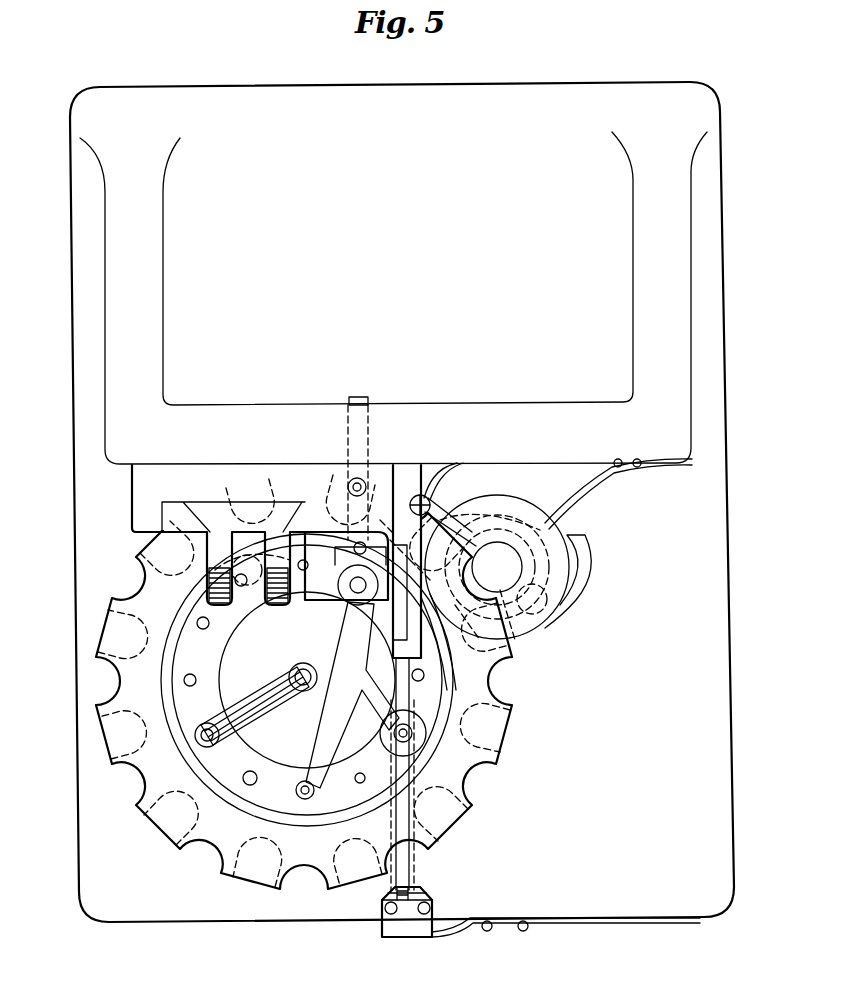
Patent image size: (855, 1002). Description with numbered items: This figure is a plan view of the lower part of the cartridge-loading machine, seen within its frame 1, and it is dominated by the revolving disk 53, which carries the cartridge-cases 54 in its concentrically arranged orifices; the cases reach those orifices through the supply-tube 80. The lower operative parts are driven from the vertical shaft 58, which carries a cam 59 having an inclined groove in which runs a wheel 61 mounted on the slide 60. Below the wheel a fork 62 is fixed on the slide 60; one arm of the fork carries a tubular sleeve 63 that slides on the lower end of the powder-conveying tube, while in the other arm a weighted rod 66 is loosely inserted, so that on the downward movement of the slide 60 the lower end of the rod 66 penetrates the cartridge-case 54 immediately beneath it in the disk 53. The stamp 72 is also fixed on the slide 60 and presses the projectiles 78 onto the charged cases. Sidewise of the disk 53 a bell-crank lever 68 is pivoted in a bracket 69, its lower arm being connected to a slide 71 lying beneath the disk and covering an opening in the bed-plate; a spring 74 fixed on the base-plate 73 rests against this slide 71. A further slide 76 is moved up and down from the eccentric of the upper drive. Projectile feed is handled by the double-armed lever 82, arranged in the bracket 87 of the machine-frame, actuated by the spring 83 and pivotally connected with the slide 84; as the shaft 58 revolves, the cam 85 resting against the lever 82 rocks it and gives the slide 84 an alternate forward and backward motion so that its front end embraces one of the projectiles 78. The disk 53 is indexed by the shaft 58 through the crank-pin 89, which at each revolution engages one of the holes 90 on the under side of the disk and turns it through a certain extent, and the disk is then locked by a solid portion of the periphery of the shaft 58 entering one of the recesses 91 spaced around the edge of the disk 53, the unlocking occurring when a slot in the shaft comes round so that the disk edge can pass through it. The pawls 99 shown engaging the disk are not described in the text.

The casing 1 is at (633, 293).
The revolving disk 53 is at (307, 680).
The cartridge-case 54 is at (255, 780).
The vertical shaft 58 is at (497, 567).
The cam 59 is at (549, 535).
The slide 60 is at (420, 534).
The wheel 61 is at (470, 640).
The fork 62 is at (366, 641).
The tubular sleeve 63 is at (316, 792).
The weighted rod 66 is at (427, 735).
The bell-crank lever 68 is at (400, 820).
The bracket 69 is at (421, 893).
The slide 71 is at (418, 785).
The stamp 72 is at (350, 600).
The base-plate 73 is at (596, 908).
The spring 74 is at (440, 940).
The slide 76 is at (232, 503).
The projectile 78 is at (352, 549).
The supply-tube 80 is at (238, 752).
The double-armed lever 82 is at (430, 510).
The spring 83 is at (574, 489).
The slide 84 is at (368, 414).
The cam 85 is at (593, 548).
The bracket 87 is at (440, 470).
The crank-pin 89 is at (549, 603).
The holes 90 is at (102, 725).
The recesses 91 is at (514, 678).
The pawls 99 is at (152, 545).